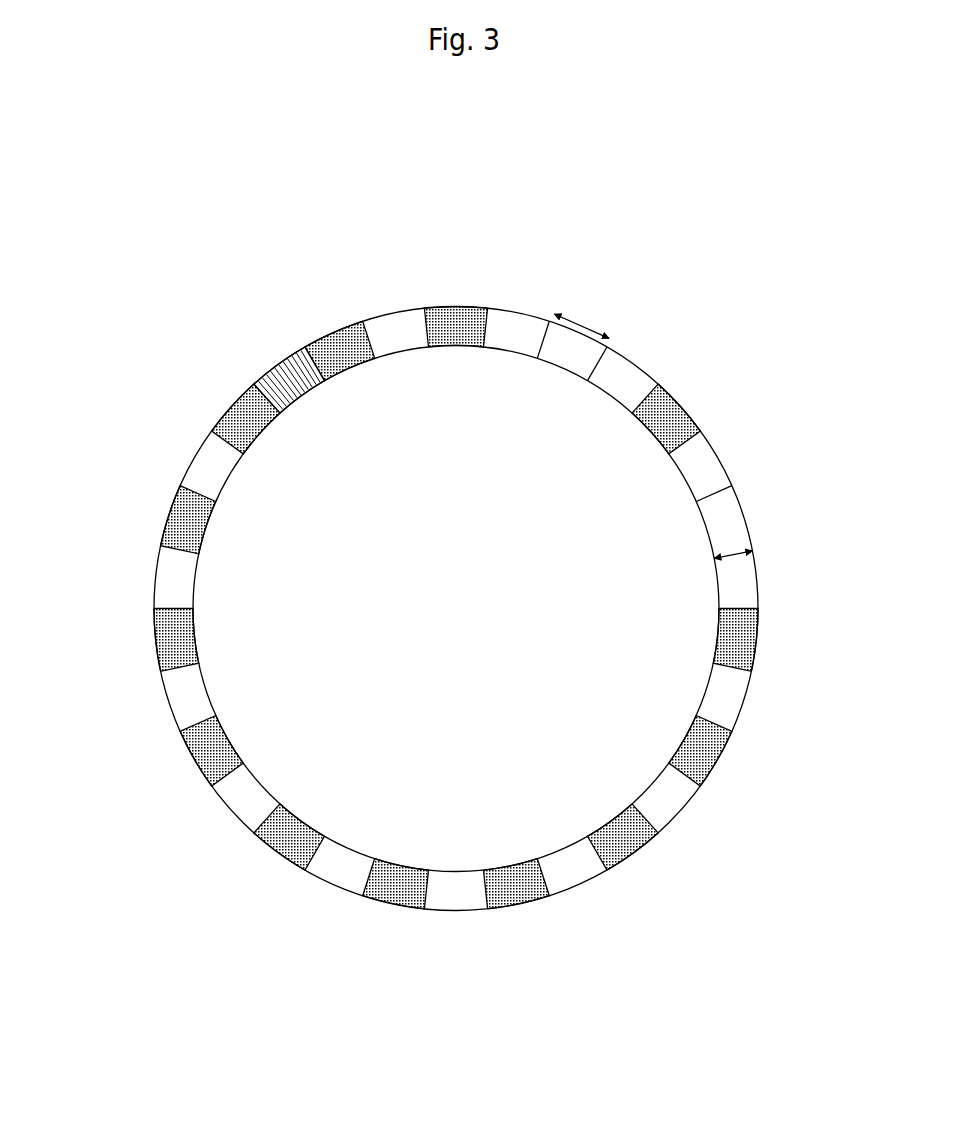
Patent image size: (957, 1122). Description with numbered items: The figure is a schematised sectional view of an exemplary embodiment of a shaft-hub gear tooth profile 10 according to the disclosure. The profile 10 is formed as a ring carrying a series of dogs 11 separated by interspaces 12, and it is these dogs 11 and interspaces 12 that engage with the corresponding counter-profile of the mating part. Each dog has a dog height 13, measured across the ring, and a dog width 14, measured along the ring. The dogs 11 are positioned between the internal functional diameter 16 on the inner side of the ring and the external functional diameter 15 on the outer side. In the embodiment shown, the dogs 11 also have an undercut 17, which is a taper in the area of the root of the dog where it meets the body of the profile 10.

The profile 10 is at (212, 468).
The dogs 11 is at (457, 320).
The interspaces 12 is at (283, 360).
The dog height 13 is at (752, 551).
The dog width 14 is at (585, 320).
The external functional diameter 15 is at (230, 818).
The internal functional diameter 16 is at (397, 352).
The undercut 17 is at (713, 665).